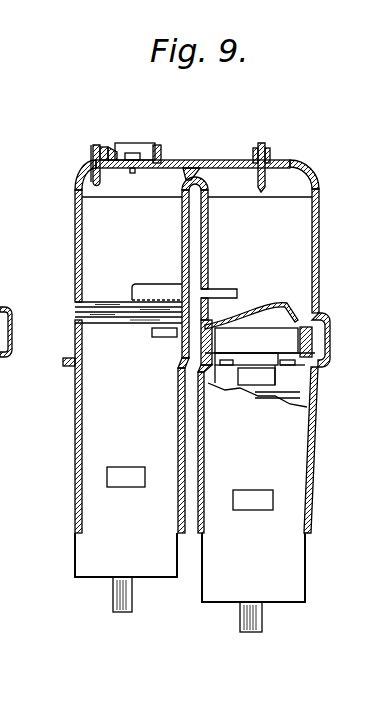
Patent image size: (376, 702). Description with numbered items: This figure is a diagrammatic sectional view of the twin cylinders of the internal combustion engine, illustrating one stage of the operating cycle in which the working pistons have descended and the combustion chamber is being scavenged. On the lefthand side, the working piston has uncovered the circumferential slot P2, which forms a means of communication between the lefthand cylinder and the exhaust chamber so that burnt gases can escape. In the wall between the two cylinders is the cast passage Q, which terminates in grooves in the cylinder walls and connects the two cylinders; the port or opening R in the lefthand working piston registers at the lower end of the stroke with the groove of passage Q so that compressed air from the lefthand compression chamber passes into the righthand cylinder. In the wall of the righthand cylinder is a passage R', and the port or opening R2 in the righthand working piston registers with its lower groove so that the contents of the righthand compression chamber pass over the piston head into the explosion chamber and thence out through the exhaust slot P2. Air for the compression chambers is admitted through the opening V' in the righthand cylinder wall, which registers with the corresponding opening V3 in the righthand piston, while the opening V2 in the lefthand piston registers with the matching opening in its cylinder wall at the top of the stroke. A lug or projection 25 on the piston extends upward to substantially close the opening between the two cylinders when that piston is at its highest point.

The circumferential slot P2 is at (73, 311).
The passage R' is at (21, 332).
The lug or projection 25 is at (145, 283).
The passage Q is at (220, 295).
The port or opening R2 is at (158, 336).
The port or opening R is at (285, 335).
The opening V' is at (257, 389).
The opening V2 is at (130, 478).
The opening V3 is at (252, 497).